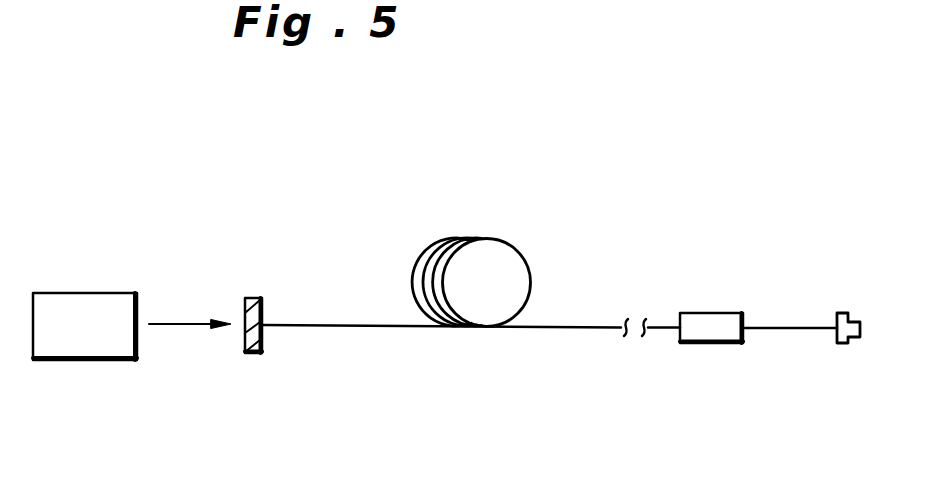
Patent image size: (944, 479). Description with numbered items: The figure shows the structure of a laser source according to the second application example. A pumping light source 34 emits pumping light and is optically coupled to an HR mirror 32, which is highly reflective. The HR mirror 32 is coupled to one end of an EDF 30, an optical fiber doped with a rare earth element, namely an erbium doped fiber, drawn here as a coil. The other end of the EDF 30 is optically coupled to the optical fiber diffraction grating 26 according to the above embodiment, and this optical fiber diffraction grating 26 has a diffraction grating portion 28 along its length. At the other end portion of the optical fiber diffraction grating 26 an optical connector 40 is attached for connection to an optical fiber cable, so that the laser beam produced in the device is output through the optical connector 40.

The optical fiber diffraction grating 26 is at (799, 327).
The diffraction grating portion 28 is at (715, 343).
The EDF 30 is at (497, 239).
The HR mirror 32 is at (248, 353).
The pumping light source 34 is at (75, 361).
The optical connector 40 is at (842, 343).